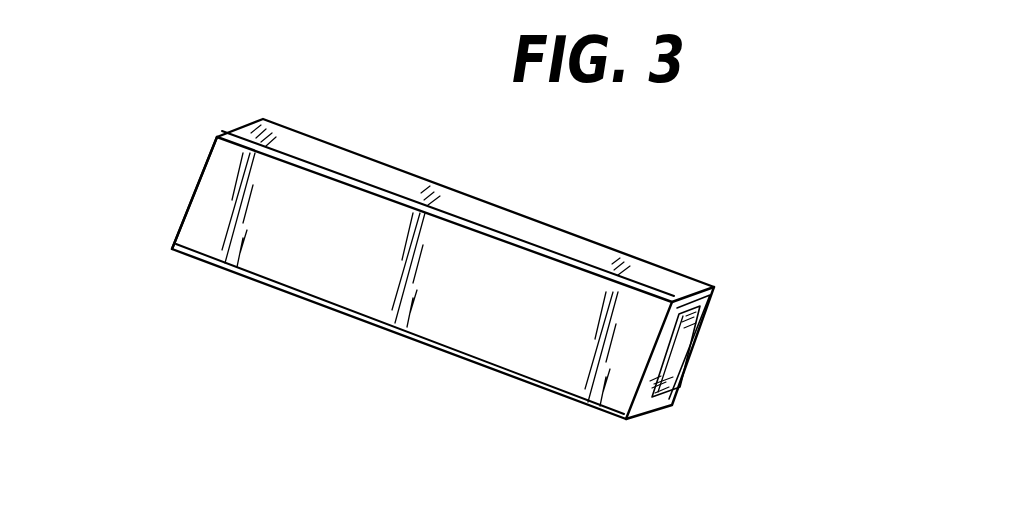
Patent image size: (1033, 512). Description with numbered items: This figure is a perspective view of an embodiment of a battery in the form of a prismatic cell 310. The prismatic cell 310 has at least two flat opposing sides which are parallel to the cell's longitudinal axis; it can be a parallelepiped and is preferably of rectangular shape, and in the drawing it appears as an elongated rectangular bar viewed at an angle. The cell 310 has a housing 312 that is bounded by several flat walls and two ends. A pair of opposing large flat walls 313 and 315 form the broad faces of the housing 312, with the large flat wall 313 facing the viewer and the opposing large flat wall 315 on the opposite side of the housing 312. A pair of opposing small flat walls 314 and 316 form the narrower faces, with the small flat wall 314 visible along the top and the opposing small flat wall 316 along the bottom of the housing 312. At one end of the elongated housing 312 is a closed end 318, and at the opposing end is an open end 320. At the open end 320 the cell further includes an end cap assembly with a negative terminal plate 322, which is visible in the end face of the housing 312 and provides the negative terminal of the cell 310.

The prismatic cell 310 is at (345, 105).
The housing 312 is at (558, 227).
The large flat wall 313 is at (283, 270).
The small flat wall 314 is at (663, 278).
The large flat wall 315 is at (437, 181).
The small flat wall 316 is at (547, 394).
The closed end 318 is at (178, 216).
The open end 320 is at (650, 401).
The negative terminal plate 322 is at (660, 385).